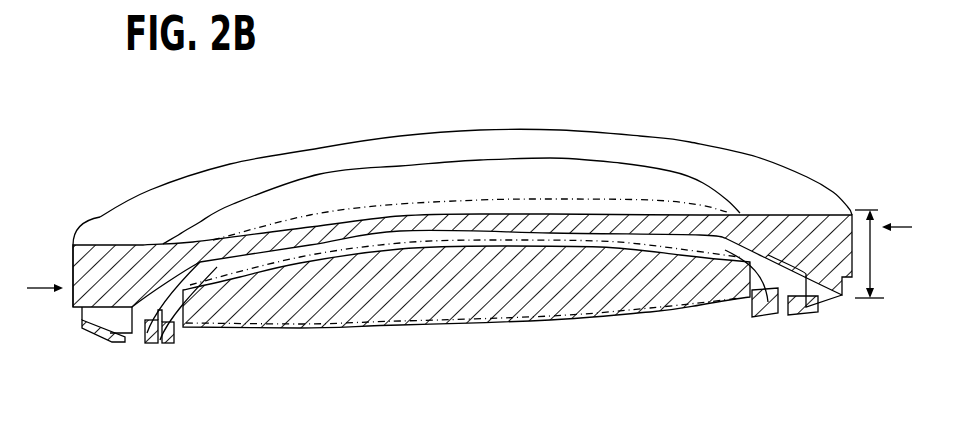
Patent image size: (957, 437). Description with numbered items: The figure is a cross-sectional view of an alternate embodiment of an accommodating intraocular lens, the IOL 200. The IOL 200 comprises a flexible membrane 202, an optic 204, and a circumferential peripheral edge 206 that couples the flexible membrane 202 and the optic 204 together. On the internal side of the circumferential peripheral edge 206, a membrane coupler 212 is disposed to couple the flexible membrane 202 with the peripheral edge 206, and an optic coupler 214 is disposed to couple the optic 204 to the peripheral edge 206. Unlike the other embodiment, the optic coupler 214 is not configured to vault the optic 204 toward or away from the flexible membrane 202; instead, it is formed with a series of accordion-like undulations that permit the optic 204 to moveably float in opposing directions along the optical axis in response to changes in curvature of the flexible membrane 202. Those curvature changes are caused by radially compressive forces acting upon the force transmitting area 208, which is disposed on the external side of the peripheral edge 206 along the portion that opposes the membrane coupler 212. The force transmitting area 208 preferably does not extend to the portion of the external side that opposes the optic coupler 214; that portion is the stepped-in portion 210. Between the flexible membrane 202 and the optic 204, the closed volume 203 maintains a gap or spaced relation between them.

The IOL 200 is at (154, 120).
The flexible membrane 202 is at (547, 177).
The closed volume 203 is at (403, 243).
The optic 204 is at (539, 328).
The circumferential peripheral edge 206 is at (886, 254).
The force transmitting area 208 is at (71, 278).
The stepped-in portion 210 is at (80, 318).
The membrane coupler 212 is at (146, 243).
The optic coupler 214 is at (160, 346).